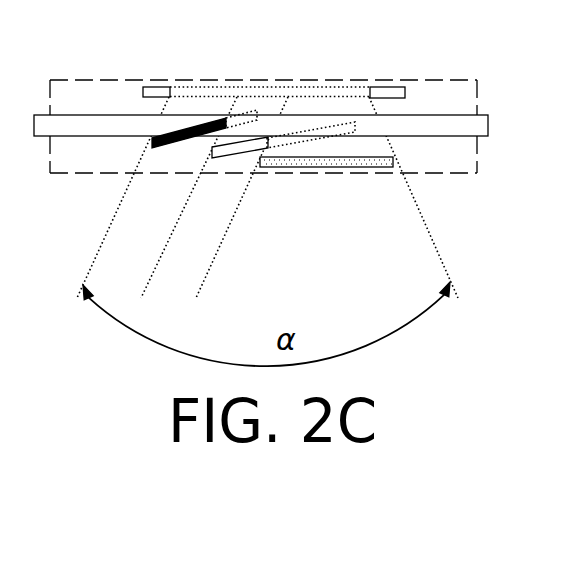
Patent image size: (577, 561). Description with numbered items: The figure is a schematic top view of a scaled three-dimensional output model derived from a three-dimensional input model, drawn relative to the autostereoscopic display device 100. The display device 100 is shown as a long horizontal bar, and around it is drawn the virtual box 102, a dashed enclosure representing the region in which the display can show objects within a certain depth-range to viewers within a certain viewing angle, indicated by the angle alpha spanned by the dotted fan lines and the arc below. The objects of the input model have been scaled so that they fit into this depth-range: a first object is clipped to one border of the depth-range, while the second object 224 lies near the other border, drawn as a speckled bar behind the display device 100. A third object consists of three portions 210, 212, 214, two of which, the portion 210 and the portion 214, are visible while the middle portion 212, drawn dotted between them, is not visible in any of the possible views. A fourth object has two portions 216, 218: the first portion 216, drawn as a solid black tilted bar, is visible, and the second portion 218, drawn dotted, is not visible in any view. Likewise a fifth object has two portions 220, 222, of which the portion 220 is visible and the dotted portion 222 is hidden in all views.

The autostereoscopic display device 100 is at (488, 128).
The virtual box 102 is at (474, 94).
The first portion of the third object 210 is at (162, 88).
The second portion of the third object 212 is at (206, 85).
The third portion of the third object 214 is at (382, 93).
The first portion of the fourth object 216 is at (180, 141).
The second portion of the fourth object 218 is at (250, 112).
The first portion of the fifth object 220 is at (247, 145).
The second portion of the fifth object 222 is at (310, 132).
The second object of the scaled three-dimensional output model 224 is at (309, 167).